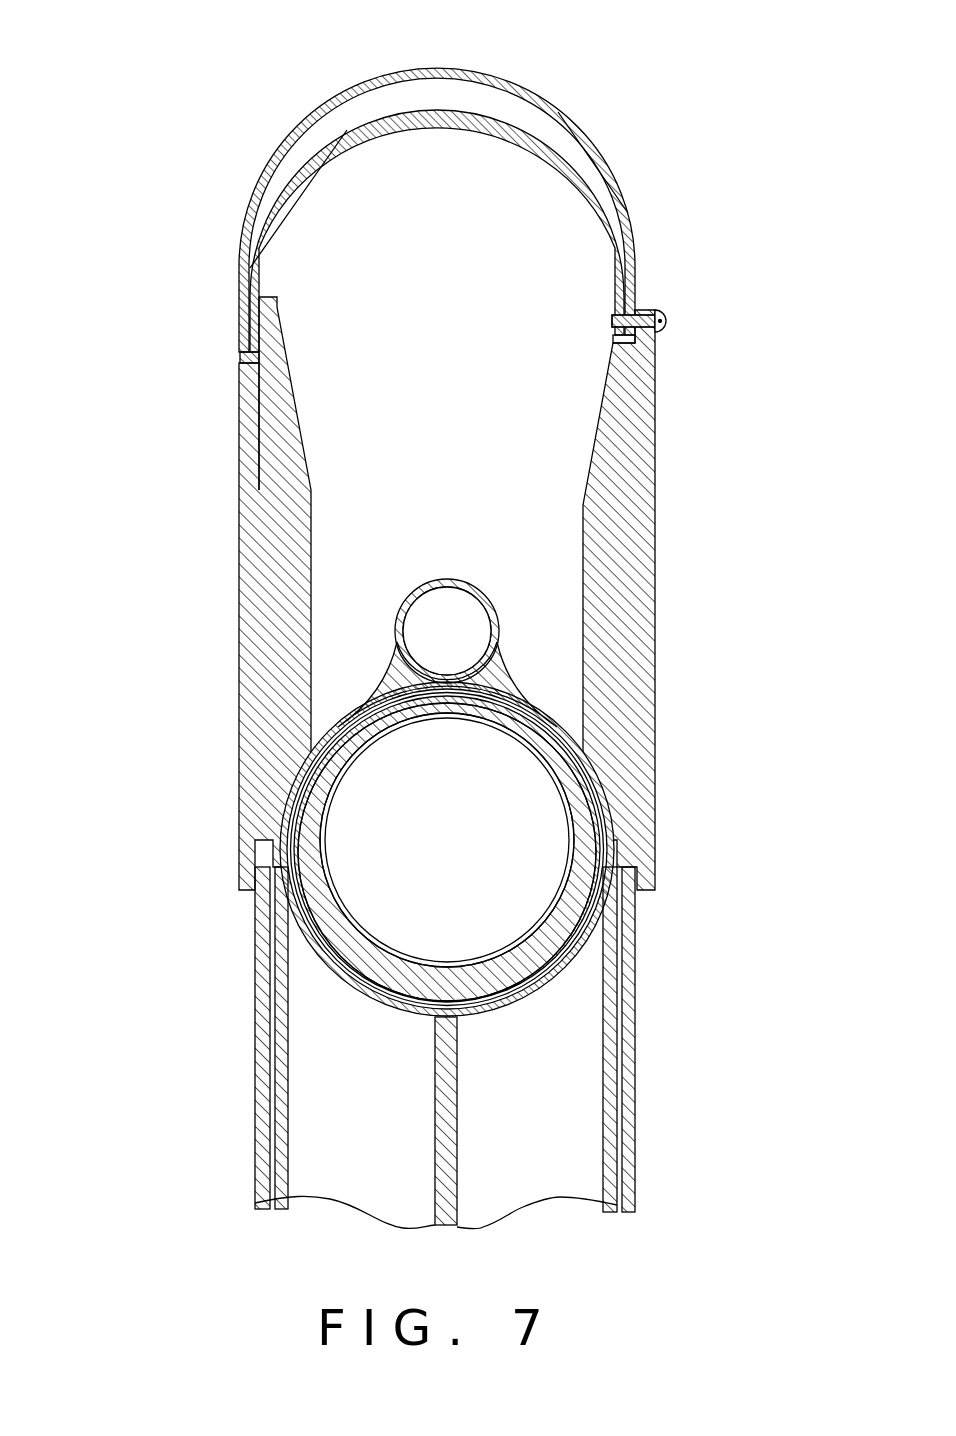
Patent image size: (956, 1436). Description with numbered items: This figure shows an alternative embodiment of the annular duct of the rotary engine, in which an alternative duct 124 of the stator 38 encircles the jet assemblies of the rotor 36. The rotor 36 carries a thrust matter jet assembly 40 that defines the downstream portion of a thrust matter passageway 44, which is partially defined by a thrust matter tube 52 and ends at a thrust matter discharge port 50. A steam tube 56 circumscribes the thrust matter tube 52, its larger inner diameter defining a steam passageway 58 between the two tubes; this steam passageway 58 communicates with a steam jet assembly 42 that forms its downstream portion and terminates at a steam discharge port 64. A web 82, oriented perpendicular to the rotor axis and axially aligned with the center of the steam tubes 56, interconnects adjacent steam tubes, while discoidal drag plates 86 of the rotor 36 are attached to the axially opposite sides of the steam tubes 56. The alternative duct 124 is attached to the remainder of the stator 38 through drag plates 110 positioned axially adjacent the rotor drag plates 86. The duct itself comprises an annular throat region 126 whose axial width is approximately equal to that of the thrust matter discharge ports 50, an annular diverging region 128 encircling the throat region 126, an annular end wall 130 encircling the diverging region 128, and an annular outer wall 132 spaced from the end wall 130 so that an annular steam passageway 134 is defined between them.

The rotor 36 is at (572, 1063).
The stator 38 is at (624, 468).
The thrust matter jet assembly 40 is at (540, 837).
The steam jet assembly 42 is at (467, 643).
The thrust matter passageway 44 is at (540, 800).
The thrust matter discharge port 50 is at (527, 772).
The thrust matter tube 52 is at (580, 748).
The steam tube 56 is at (578, 945).
The steam passageway 58 is at (600, 856).
The steam discharge port 64 is at (475, 625).
The web 82 is at (460, 1162).
The drag plate 86 is at (265, 1025).
The drag plate 110 is at (265, 935).
The alternative duct 124 is at (636, 372).
The annular throat region 126 is at (342, 612).
The annular diverging region 128 is at (347, 417).
The annular end wall 130 is at (338, 138).
The annular outer wall 132 is at (372, 72).
The annular steam passageway 134 is at (452, 90).